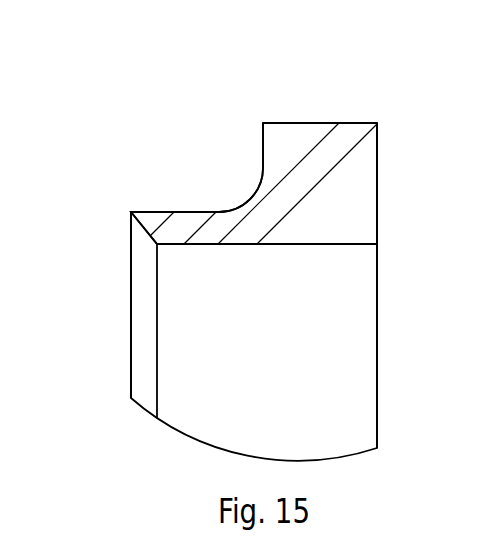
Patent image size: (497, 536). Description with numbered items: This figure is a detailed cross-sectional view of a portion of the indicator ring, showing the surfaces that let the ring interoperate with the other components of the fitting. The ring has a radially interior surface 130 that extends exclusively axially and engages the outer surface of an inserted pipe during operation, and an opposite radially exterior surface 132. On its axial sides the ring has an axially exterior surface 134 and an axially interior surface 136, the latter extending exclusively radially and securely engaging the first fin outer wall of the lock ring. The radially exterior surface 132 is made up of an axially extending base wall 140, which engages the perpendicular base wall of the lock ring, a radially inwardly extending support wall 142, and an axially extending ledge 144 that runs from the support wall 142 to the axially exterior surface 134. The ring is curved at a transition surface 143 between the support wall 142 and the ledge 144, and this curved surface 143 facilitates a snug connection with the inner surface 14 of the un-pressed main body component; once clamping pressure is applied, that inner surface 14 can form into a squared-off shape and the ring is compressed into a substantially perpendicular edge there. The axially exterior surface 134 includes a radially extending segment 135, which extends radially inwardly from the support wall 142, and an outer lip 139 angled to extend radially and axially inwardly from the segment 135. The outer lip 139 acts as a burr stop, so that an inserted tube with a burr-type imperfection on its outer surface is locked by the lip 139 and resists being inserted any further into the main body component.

The inner surface 14 is at (83, 4).
The radially interior surface 130 is at (350, 437).
The radially exterior surface 132 is at (317, 67).
The axially exterior surface 134 is at (88, 245).
The radially extending segment 135 is at (130, 212).
The axially interior surface 136 is at (378, 163).
The outer lip 139 is at (140, 316).
The axially extending base wall 140 is at (339, 122).
The support wall 142 is at (259, 135).
The transition surface 143 is at (248, 197).
The ledge 144 is at (162, 208).